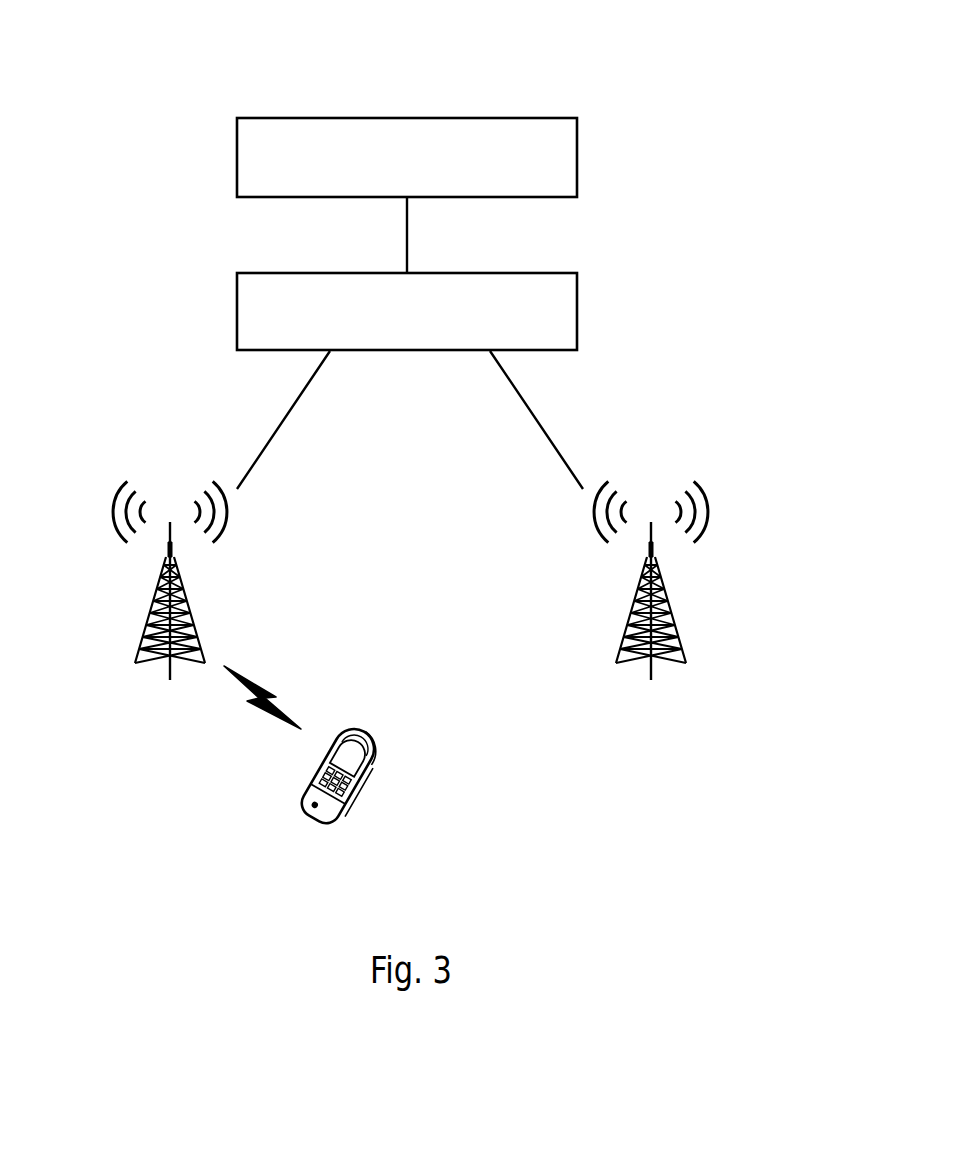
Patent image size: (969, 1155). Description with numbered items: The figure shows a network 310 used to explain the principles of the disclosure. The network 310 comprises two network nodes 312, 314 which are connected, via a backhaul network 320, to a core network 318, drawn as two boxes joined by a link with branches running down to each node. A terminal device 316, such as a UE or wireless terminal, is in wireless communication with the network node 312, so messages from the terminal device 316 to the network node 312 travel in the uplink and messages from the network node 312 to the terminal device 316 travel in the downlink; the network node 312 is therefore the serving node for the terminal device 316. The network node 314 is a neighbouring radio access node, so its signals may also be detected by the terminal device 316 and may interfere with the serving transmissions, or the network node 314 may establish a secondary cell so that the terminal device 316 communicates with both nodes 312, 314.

The network 310 is at (649, 42).
The network node 312 is at (137, 573).
The network node 314 is at (683, 575).
The terminal device 316 is at (297, 765).
The core network 318 is at (237, 142).
The backhaul network 320 is at (237, 297).